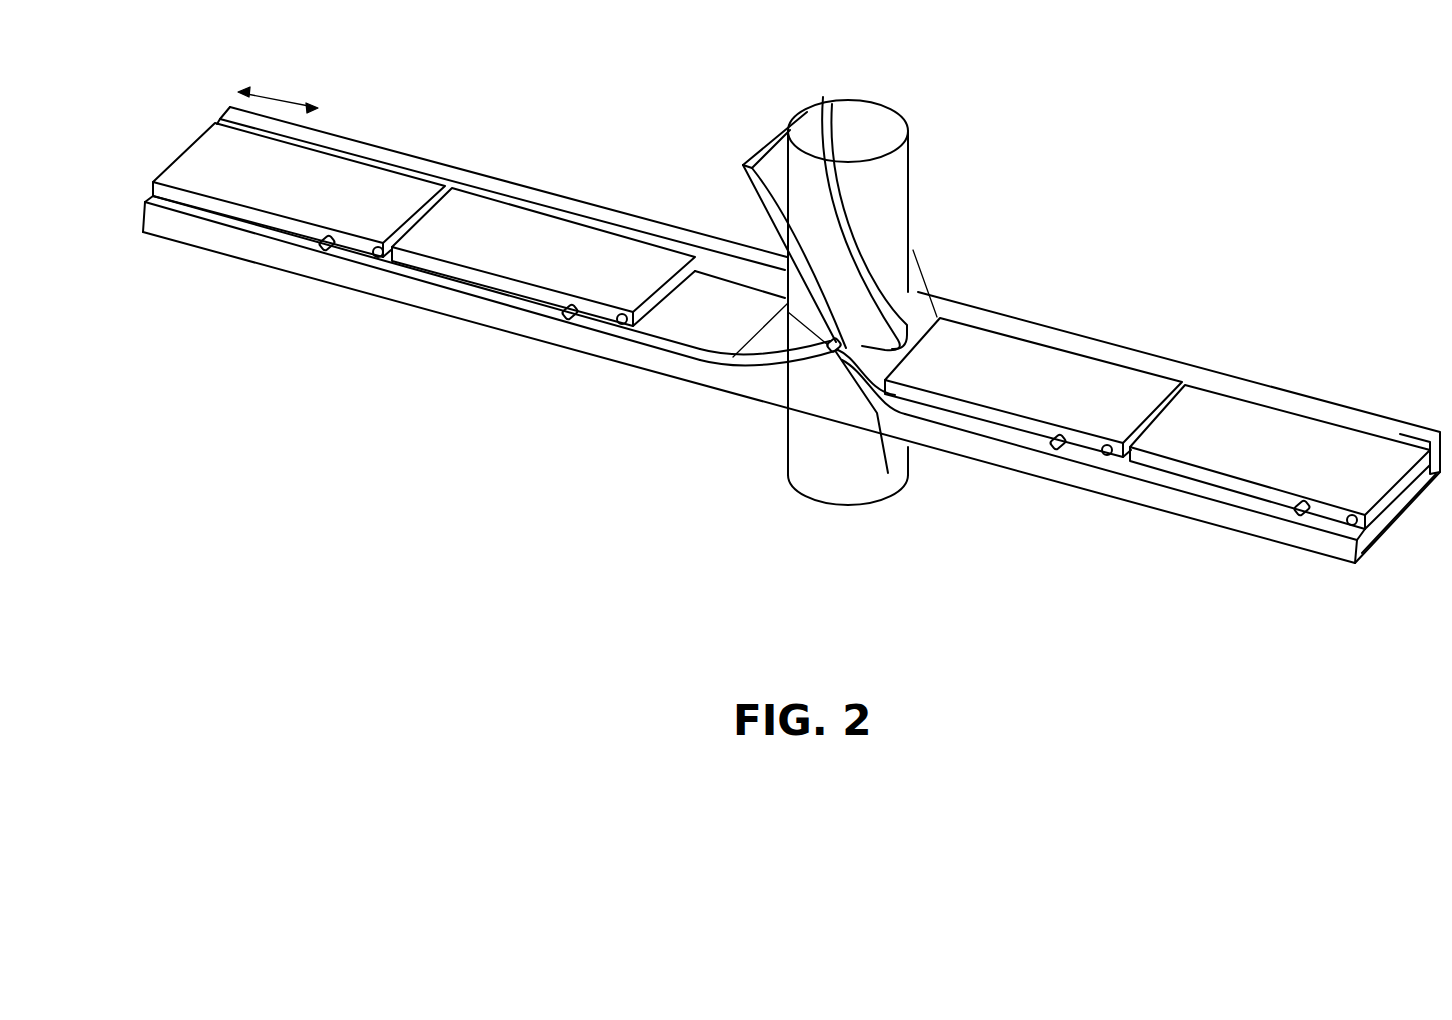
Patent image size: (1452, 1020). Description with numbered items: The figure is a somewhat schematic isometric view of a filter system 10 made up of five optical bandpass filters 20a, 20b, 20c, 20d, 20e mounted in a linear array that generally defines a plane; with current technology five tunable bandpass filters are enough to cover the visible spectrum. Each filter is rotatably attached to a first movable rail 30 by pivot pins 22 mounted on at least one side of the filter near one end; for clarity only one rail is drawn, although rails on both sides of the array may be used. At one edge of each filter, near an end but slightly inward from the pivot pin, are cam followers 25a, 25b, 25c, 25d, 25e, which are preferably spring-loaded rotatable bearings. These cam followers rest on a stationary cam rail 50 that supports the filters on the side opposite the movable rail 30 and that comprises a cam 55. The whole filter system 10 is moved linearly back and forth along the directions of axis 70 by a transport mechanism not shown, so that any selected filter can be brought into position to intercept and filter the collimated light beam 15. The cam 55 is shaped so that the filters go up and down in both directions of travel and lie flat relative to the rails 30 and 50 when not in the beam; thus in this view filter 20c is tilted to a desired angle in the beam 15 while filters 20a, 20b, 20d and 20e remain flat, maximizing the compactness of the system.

The filter system 10 is at (1108, 88).
The collimated light beam 15 is at (880, 193).
The optical bandpass filter 20a is at (299, 190).
The optical bandpass filter 20b is at (543, 257).
The optical bandpass filter 20c is at (918, 321).
The optical bandpass filter 20d is at (1033, 387).
The optical bandpass filter 20e is at (1280, 457).
The pivot pin 22 is at (380, 258).
The cam follower 25a is at (320, 251).
The cam follower 25b is at (570, 320).
The cam follower 25c is at (888, 473).
The cam follower 25d is at (1056, 453).
The cam follower 25e is at (1297, 520).
The first movable rail 30 is at (602, 215).
The stationary cam rail 50 is at (200, 236).
The cam 55 is at (790, 371).
The axis 70 is at (282, 91).